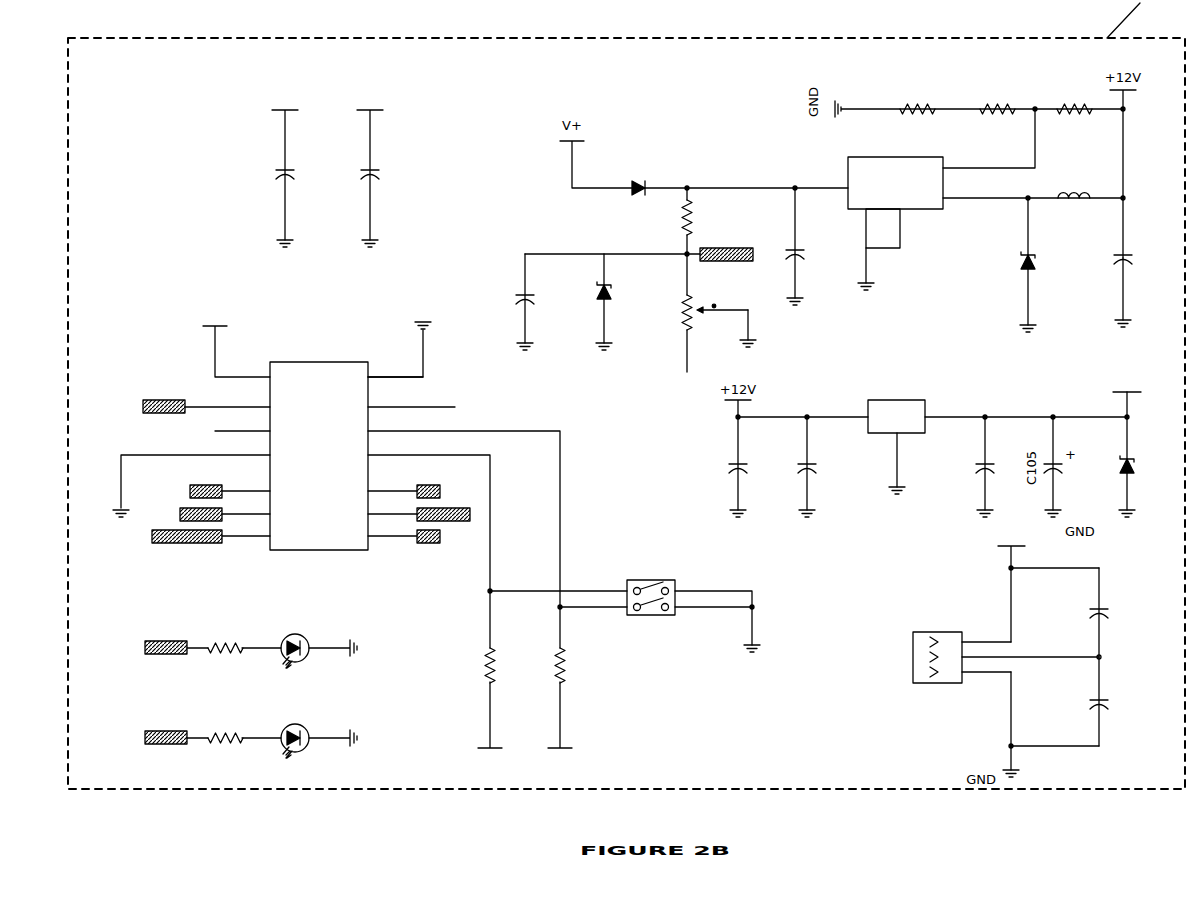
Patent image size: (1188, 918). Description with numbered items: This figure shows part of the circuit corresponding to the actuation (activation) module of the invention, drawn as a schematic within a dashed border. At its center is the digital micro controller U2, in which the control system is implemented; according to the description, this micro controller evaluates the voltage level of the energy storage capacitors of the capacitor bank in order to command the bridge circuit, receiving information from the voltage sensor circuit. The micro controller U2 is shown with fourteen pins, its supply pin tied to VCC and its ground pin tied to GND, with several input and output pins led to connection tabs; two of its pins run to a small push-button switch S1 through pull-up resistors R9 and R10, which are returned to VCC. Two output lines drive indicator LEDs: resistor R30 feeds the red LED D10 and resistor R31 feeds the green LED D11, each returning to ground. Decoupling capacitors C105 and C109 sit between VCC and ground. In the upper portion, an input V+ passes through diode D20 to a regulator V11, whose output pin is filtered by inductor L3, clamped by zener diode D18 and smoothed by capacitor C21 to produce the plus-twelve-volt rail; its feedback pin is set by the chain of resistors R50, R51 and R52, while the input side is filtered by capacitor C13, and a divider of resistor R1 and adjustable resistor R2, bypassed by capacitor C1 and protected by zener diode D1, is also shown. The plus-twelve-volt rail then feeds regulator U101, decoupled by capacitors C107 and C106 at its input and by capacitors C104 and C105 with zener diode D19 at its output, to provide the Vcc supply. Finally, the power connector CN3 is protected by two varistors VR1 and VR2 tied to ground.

The capacitor C105 is at (291, 174).
The capacitor C109 is at (376, 174).
The digital micro controller U2 is at (322, 478).
The resistor R9 is at (484, 708).
The resistor R10 is at (554, 688).
The switch S1 is at (642, 613).
The resistor R30 is at (213, 636).
The red LED D10 is at (318, 645).
The resistor R31 is at (213, 726).
The green LED D11 is at (315, 735).
The diode D20 is at (640, 177).
The resistor R1 is at (675, 221).
The potentiometer R2 is at (724, 310).
The capacitor C1 is at (531, 307).
The zener diode D1 is at (621, 307).
The capacitor C13 is at (800, 254).
The resistor R52 is at (916, 101).
The resistor R51 is at (997, 101).
The resistor R50 is at (1074, 101).
The voltage regulator V11 is at (985, 205).
The zener diode D18 is at (1045, 270).
The inductor L3 is at (1074, 208).
The capacitor C21 is at (1129, 269).
The capacitor C107 is at (730, 489).
The capacitor C106 is at (813, 474).
The voltage regulator U101 is at (899, 446).
The capacitor C104 is at (970, 478).
The zener diode D19 is at (1133, 450).
The power connector CN3 is at (1006, 657).
The varistor VR1 is at (1097, 701).
The varistor VR2 is at (1097, 612).